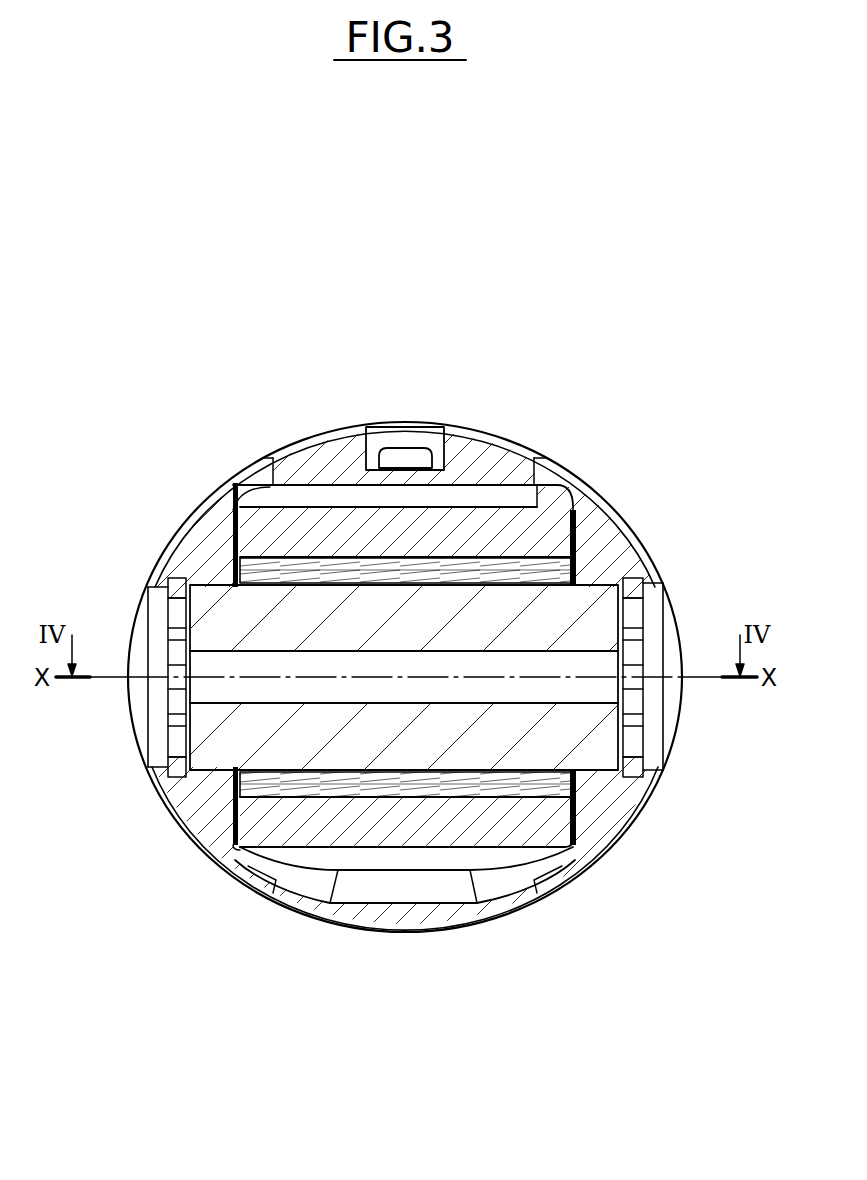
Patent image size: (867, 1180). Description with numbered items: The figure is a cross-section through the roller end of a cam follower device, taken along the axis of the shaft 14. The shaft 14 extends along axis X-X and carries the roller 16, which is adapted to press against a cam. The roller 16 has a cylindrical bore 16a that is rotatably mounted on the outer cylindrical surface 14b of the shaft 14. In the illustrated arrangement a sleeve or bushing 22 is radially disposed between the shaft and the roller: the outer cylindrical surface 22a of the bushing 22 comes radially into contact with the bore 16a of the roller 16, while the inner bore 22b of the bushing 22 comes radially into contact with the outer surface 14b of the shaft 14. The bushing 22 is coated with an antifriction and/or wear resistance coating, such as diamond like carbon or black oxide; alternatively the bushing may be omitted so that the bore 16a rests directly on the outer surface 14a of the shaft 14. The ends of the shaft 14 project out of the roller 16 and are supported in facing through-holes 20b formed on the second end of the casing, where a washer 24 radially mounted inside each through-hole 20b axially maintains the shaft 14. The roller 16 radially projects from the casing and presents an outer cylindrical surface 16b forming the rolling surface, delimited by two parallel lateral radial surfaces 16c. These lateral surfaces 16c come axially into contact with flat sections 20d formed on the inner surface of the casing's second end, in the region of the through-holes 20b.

The shaft 14 is at (587, 603).
The outer surface of the shaft 14a is at (208, 583).
The outer cylindrical surface of the shaft 14b is at (220, 757).
The roller 16 is at (477, 523).
The bore of the roller 16a is at (527, 563).
The outer cylindrical surface of the roller 16b is at (400, 847).
The lateral radial surfaces of the roller 16c is at (232, 822).
The through-holes 20b is at (643, 762).
The flat sections 20d is at (245, 525).
The bushing 22 is at (303, 565).
The outer cylindrical surface of the bushing 22a is at (361, 553).
The inner bore of the bushing 22b is at (440, 603).
The washer 24 is at (633, 588).